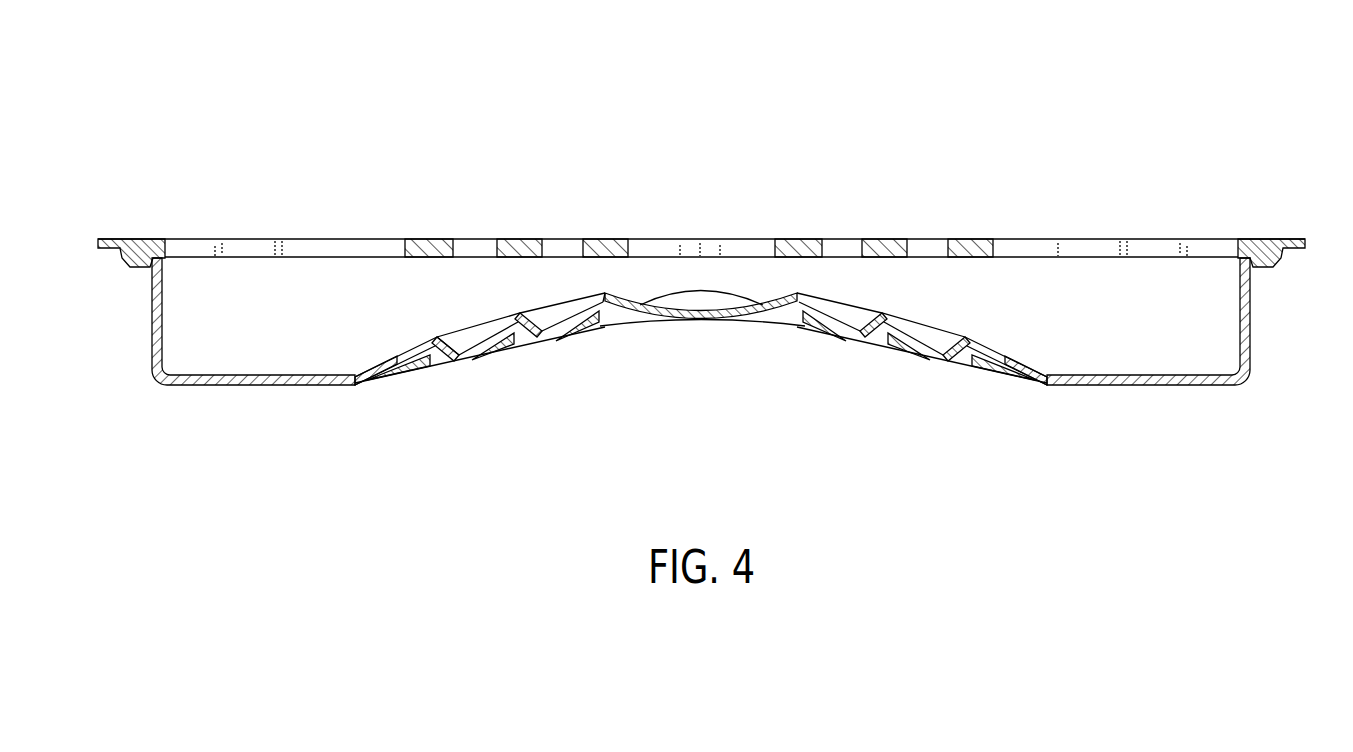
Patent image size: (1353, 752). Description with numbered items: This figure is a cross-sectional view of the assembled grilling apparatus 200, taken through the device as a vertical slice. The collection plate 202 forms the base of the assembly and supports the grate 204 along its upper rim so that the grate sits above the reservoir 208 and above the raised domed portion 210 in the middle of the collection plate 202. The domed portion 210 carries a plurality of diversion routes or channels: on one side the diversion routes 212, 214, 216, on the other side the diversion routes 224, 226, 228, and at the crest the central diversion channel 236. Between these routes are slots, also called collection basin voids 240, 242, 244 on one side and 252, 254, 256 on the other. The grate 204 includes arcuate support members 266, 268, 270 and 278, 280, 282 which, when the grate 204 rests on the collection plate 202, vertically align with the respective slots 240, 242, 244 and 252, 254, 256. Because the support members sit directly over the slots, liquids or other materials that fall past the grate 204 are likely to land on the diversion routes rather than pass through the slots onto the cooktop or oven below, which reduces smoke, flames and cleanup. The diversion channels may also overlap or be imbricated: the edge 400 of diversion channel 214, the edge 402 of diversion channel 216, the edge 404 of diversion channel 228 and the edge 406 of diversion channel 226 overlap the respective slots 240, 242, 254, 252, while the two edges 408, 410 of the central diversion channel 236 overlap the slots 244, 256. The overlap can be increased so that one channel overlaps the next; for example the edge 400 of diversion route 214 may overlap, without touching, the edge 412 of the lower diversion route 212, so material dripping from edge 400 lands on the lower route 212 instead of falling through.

The grilling apparatus 200 is at (968, 79).
The collection plate 202 is at (1284, 330).
The grate 204 is at (1152, 206).
The reservoir 208 is at (262, 374).
The domed portion 210 is at (450, 321).
The diversion route 212 is at (394, 380).
The diversion route 214 is at (494, 352).
The diversion route 216 is at (570, 341).
The diversion route 224 is at (1010, 370).
The diversion route 226 is at (918, 360).
The diversion route 228 is at (832, 336).
The diversion channel 236 is at (706, 309).
The slot 240 is at (424, 393).
The slot 242 is at (526, 363).
The slot 244 is at (612, 334).
The slot 252 is at (978, 388).
The slot 254 is at (877, 359).
The slot 256 is at (788, 331).
The arcuate support member 266 is at (432, 239).
The arcuate support member 268 is at (517, 239).
The arcuate support member 270 is at (605, 239).
The arcuate support member 278 is at (970, 239).
The arcuate support member 280 is at (885, 239).
The arcuate support member 282 is at (795, 239).
The edge 400 is at (434, 337).
The edge 402 is at (522, 317).
The edge 404 is at (881, 313).
The edge 406 is at (966, 337).
The edge 408 is at (606, 292).
The edge 410 is at (798, 292).
The edge 412 is at (447, 361).